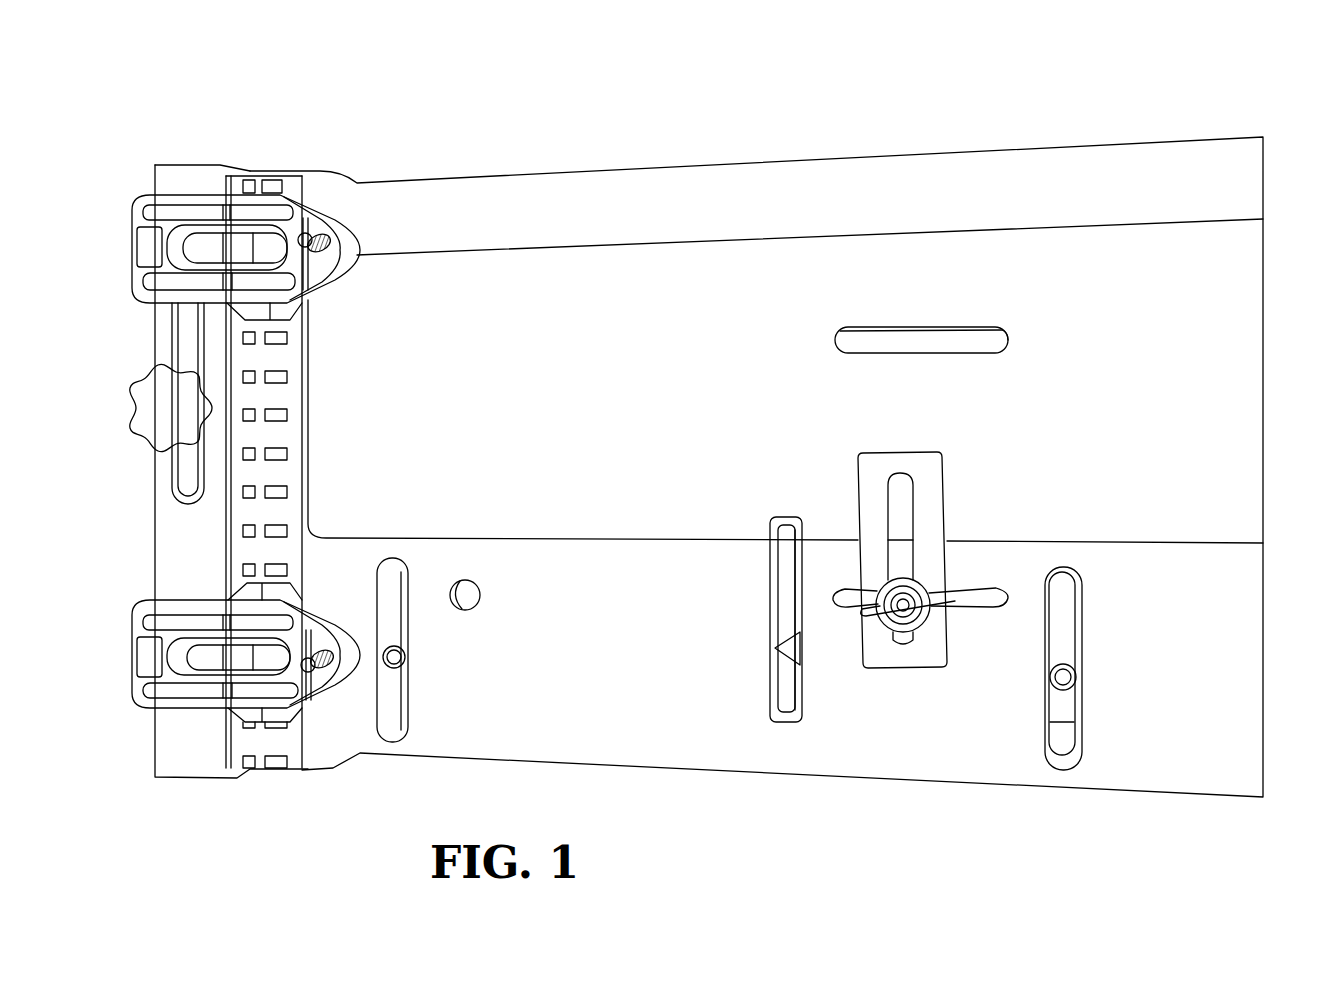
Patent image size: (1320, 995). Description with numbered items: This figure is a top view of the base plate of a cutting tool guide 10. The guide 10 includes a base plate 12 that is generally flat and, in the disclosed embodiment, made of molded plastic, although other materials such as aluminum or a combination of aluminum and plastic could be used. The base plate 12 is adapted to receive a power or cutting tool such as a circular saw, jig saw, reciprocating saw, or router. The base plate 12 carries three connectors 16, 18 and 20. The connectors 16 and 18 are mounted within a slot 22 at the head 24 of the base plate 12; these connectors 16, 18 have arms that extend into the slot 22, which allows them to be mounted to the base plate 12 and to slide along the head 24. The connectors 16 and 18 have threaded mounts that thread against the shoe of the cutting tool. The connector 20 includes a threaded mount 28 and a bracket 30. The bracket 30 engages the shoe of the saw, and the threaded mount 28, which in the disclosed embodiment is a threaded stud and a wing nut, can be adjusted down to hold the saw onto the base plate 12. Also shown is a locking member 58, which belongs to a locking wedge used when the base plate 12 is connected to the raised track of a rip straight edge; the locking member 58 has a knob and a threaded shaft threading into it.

The cutting tool guide 10 is at (950, 120).
The base plate 12 is at (1178, 273).
The connector 16 is at (153, 220).
The connector 18 is at (137, 628).
The connector 20 is at (947, 538).
The slot 22 is at (248, 410).
The head 24 is at (155, 510).
The threaded mount 28 is at (900, 612).
The bracket 30 is at (1020, 590).
The locking member 58 is at (140, 383).